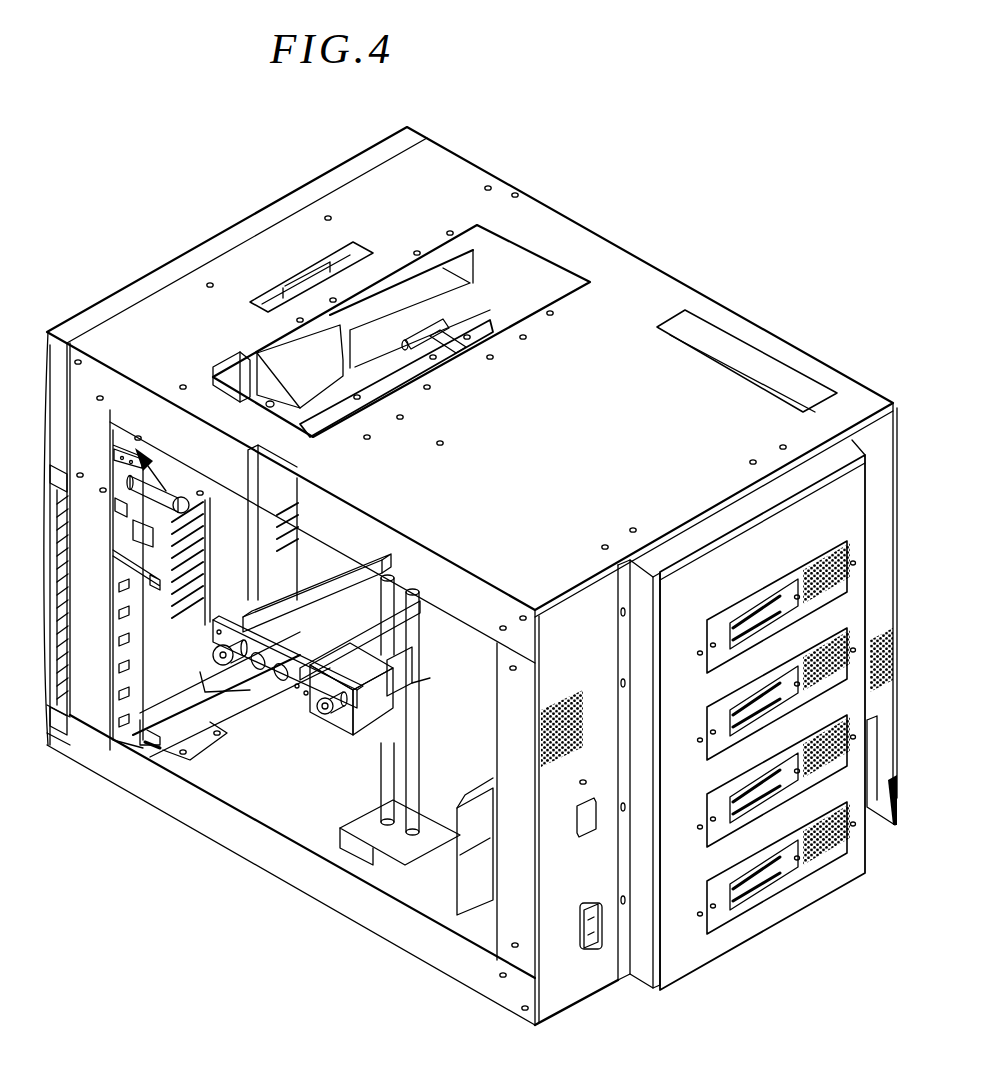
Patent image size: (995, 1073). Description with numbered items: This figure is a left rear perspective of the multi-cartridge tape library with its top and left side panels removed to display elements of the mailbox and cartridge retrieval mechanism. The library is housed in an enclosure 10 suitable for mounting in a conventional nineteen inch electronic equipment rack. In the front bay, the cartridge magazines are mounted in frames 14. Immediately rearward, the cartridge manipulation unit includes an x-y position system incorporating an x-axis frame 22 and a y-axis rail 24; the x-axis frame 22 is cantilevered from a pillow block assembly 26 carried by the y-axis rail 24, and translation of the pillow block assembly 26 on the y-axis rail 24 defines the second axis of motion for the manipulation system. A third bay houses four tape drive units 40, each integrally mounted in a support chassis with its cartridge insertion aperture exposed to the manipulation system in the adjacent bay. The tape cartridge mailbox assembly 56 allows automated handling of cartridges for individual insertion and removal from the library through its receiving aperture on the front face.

The enclosure 10 is at (662, 273).
The frames 14 is at (120, 653).
The x-axis frame 22 is at (300, 687).
The y-axis rail 24 is at (387, 612).
The pillow block assembly 26 is at (395, 730).
The tape drive units 40 is at (793, 610).
The tape cartridge mailbox assembly 56 is at (166, 491).